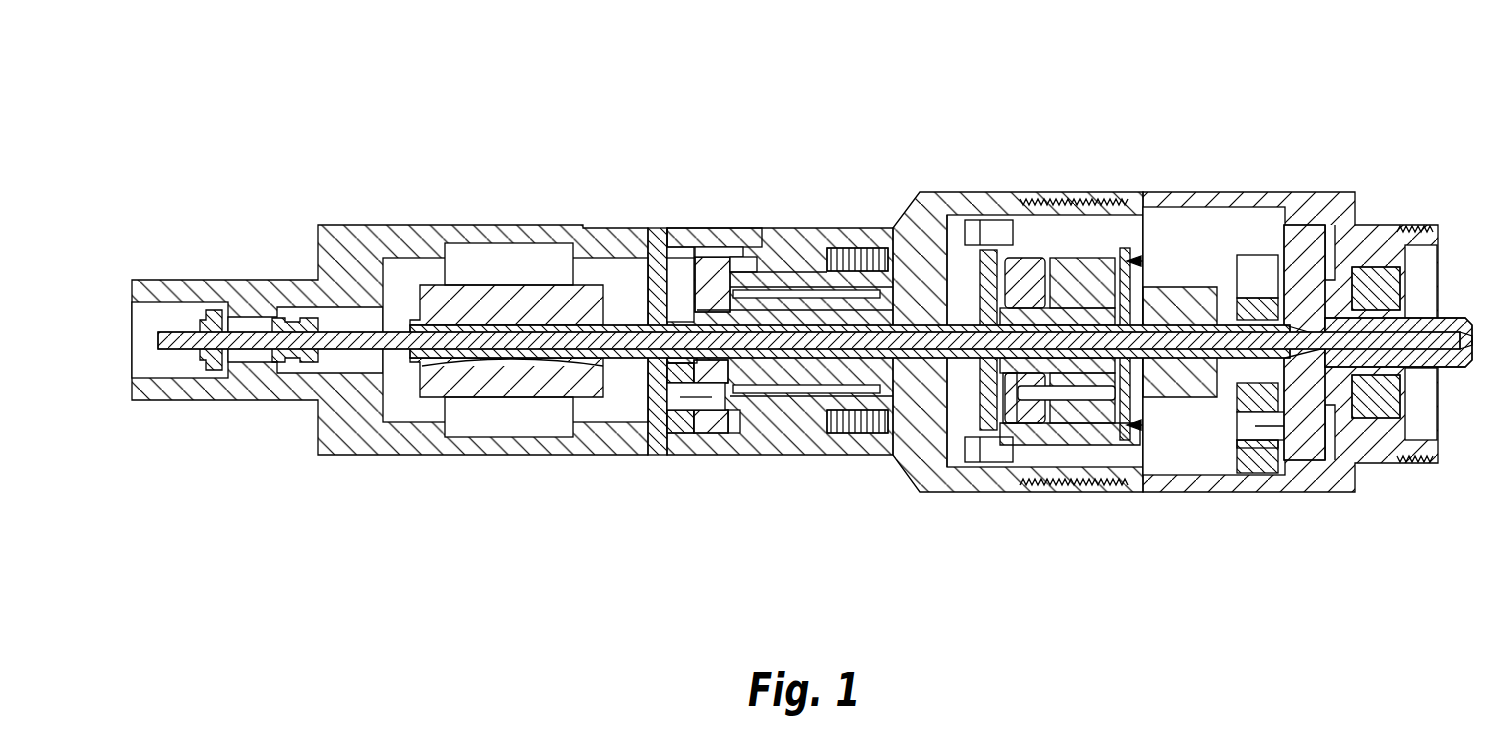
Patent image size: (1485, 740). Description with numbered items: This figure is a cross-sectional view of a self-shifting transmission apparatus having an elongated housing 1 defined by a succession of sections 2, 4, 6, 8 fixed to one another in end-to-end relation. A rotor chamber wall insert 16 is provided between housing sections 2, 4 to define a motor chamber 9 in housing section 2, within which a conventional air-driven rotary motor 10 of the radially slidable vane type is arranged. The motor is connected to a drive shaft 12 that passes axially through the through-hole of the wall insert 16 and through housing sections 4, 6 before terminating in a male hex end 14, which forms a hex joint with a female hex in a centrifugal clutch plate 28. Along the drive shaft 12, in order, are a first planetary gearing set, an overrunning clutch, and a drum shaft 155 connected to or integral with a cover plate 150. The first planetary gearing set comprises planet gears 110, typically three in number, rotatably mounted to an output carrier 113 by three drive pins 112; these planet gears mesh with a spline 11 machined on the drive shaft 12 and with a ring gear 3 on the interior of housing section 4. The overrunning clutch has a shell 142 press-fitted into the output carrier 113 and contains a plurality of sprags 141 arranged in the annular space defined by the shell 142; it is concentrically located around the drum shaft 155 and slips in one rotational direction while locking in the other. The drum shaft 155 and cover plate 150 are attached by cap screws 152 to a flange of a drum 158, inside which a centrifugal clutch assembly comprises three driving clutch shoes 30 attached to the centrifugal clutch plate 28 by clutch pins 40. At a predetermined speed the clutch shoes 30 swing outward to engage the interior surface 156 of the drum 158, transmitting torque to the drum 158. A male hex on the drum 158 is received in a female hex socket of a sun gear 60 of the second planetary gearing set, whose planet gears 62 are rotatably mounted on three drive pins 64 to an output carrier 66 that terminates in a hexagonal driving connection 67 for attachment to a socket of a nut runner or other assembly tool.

The elongated housing 1 is at (1393, 160).
The housing section 2 is at (345, 238).
The ring gear 3 is at (681, 258).
The housing section 4 is at (700, 232).
The housing section 6 is at (907, 240).
The housing section 8 is at (1180, 210).
The motor chamber 9 is at (530, 262).
The rotary motor 10 is at (465, 292).
The spline 11 is at (684, 352).
The drive shaft 12 is at (625, 300).
The male hex end 14 is at (1018, 372).
The rotor chamber wall insert 16 is at (672, 262).
The centrifugal clutch plate 28 is at (1022, 300).
The driving clutch shoe 30 is at (1090, 280).
The clutch pin 40 is at (1077, 398).
The sun gear 60 is at (1248, 305).
The planet gear 62 is at (1258, 460).
The drive pin 64 is at (1252, 432).
The output carrier 66 is at (1312, 235).
The hexagonal driving connection 67 is at (1442, 325).
The planet gear 110 is at (683, 400).
The drive pin 112 is at (644, 395).
The output carrier 113 is at (727, 405).
The sprag 141 is at (792, 380).
The shell 142 is at (756, 300).
The cover plate 150 is at (978, 402).
The cap screw 152 is at (978, 235).
The drum shaft 155 is at (793, 318).
The interior surface 156 is at (1080, 275).
The drum 158 is at (1110, 248).